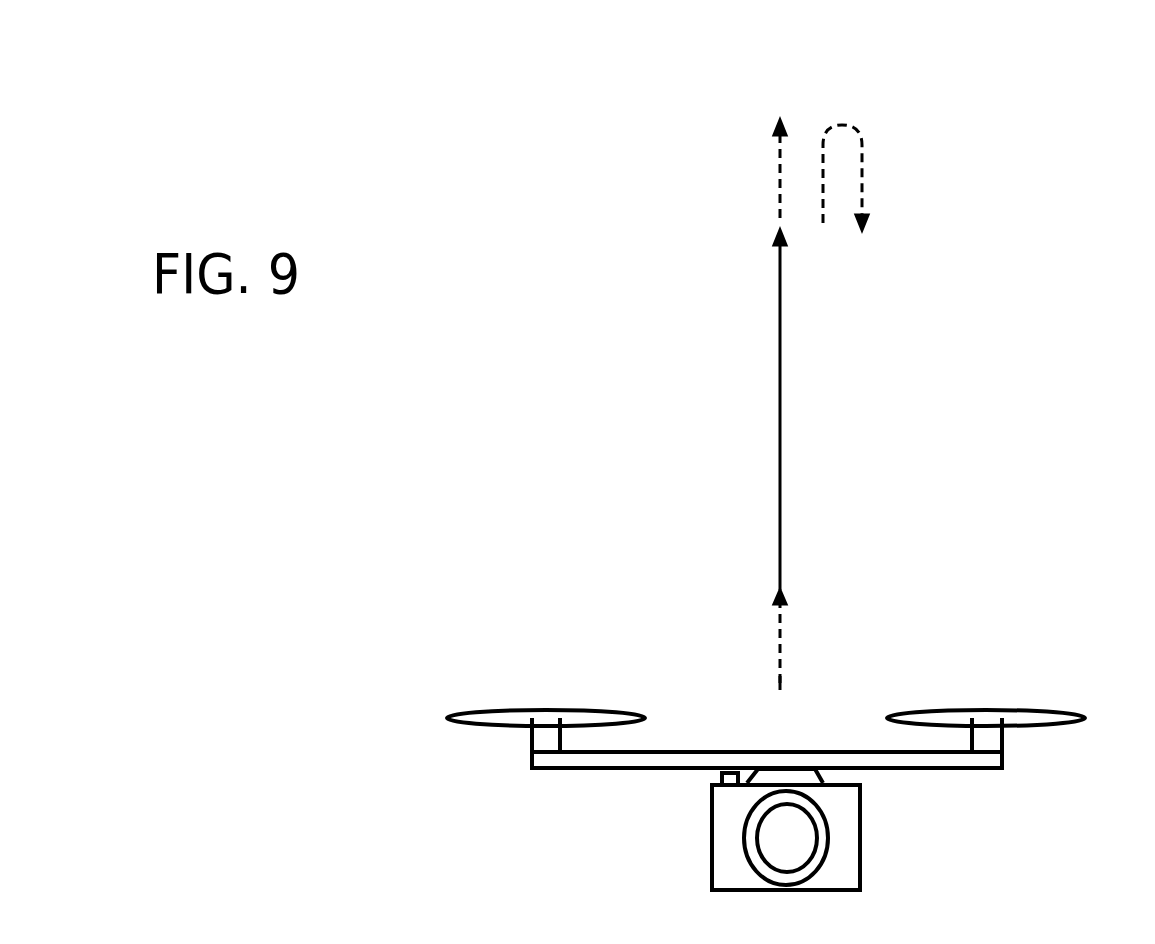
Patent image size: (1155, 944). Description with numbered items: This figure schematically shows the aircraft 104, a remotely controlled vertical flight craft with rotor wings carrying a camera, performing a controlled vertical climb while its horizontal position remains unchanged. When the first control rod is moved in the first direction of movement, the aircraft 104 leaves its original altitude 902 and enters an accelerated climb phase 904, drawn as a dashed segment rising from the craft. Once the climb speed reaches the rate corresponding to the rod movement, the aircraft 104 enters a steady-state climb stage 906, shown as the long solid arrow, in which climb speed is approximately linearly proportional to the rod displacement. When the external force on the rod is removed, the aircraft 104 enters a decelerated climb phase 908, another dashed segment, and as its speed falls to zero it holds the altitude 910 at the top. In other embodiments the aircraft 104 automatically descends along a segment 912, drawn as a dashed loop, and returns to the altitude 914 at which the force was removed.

The aircraft 104 is at (367, 698).
The original altitude 902 is at (780, 683).
The accelerated climb phase 904 is at (780, 658).
The steady-state climb stage 906 is at (780, 490).
The decelerated climb phase 908 is at (780, 192).
The altitude 910 is at (780, 120).
The segment 912 is at (865, 175).
The altitude 914 is at (782, 238).